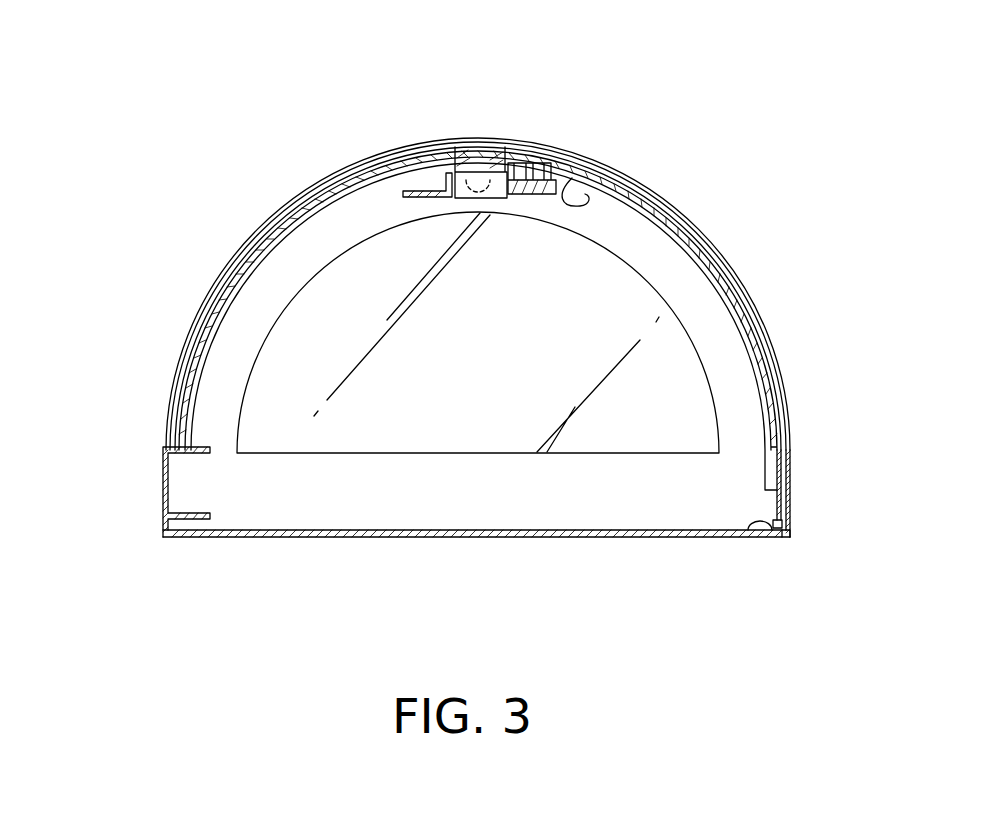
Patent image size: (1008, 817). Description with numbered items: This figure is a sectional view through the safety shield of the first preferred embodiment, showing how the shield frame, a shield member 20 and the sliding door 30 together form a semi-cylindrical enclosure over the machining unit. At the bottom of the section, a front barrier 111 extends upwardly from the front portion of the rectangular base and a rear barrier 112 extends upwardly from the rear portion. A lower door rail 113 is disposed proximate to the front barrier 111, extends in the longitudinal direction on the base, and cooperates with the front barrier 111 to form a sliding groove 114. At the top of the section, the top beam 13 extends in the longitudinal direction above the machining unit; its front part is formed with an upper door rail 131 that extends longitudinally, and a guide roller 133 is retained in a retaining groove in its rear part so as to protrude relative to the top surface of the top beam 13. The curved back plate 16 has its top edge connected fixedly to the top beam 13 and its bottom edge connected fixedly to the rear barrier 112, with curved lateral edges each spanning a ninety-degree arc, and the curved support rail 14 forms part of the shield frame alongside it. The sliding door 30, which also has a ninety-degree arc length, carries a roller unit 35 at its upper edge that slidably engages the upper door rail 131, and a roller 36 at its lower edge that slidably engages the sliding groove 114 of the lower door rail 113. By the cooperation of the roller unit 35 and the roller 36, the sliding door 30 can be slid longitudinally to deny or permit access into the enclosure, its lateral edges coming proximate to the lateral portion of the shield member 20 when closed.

The top beam 13 is at (448, 172).
The guide roller 133 is at (478, 168).
The roller unit 35 is at (547, 163).
The upper door rail 131 is at (572, 178).
The curved support rail 14 is at (316, 225).
The curved back plate 16 is at (255, 262).
The shield member 20 is at (768, 340).
The sliding door 30 is at (788, 441).
The front barrier 111 is at (800, 470).
The rear barrier 112 is at (165, 452).
The lower door rail 113 is at (753, 524).
The sliding groove 114 is at (787, 537).
The roller 36 is at (774, 540).